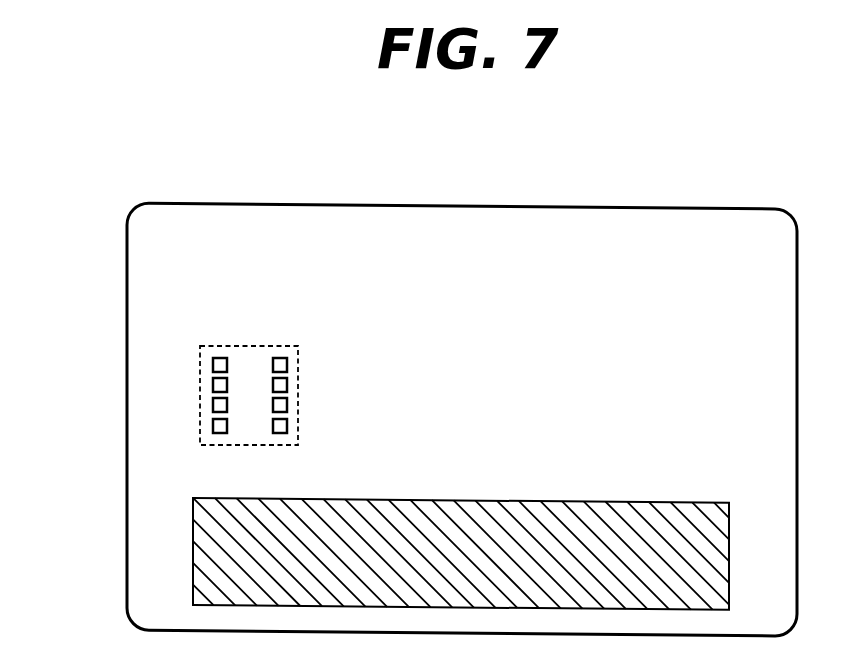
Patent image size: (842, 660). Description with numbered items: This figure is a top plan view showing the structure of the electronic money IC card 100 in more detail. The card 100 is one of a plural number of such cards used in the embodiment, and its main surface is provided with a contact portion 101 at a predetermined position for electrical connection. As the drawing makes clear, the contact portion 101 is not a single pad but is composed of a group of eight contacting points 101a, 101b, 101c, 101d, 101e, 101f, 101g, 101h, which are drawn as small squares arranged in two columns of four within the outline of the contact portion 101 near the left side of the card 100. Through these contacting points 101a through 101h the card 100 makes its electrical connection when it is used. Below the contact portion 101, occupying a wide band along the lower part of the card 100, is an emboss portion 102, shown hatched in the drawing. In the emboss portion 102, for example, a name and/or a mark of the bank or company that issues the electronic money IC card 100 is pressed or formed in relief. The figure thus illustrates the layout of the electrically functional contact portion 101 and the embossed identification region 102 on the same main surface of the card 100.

The electronic money IC card 100 is at (685, 208).
The contact portion 101 is at (240, 346).
The contacting point 101a is at (213, 364).
The contacting point 101b is at (213, 388).
The contacting point 101c is at (213, 405).
The contacting point 101d is at (214, 430).
The contacting point 101e is at (287, 364).
The contacting point 101f is at (287, 389).
The contacting point 101g is at (287, 405).
The contacting point 101h is at (287, 432).
The emboss portion 102 is at (670, 517).